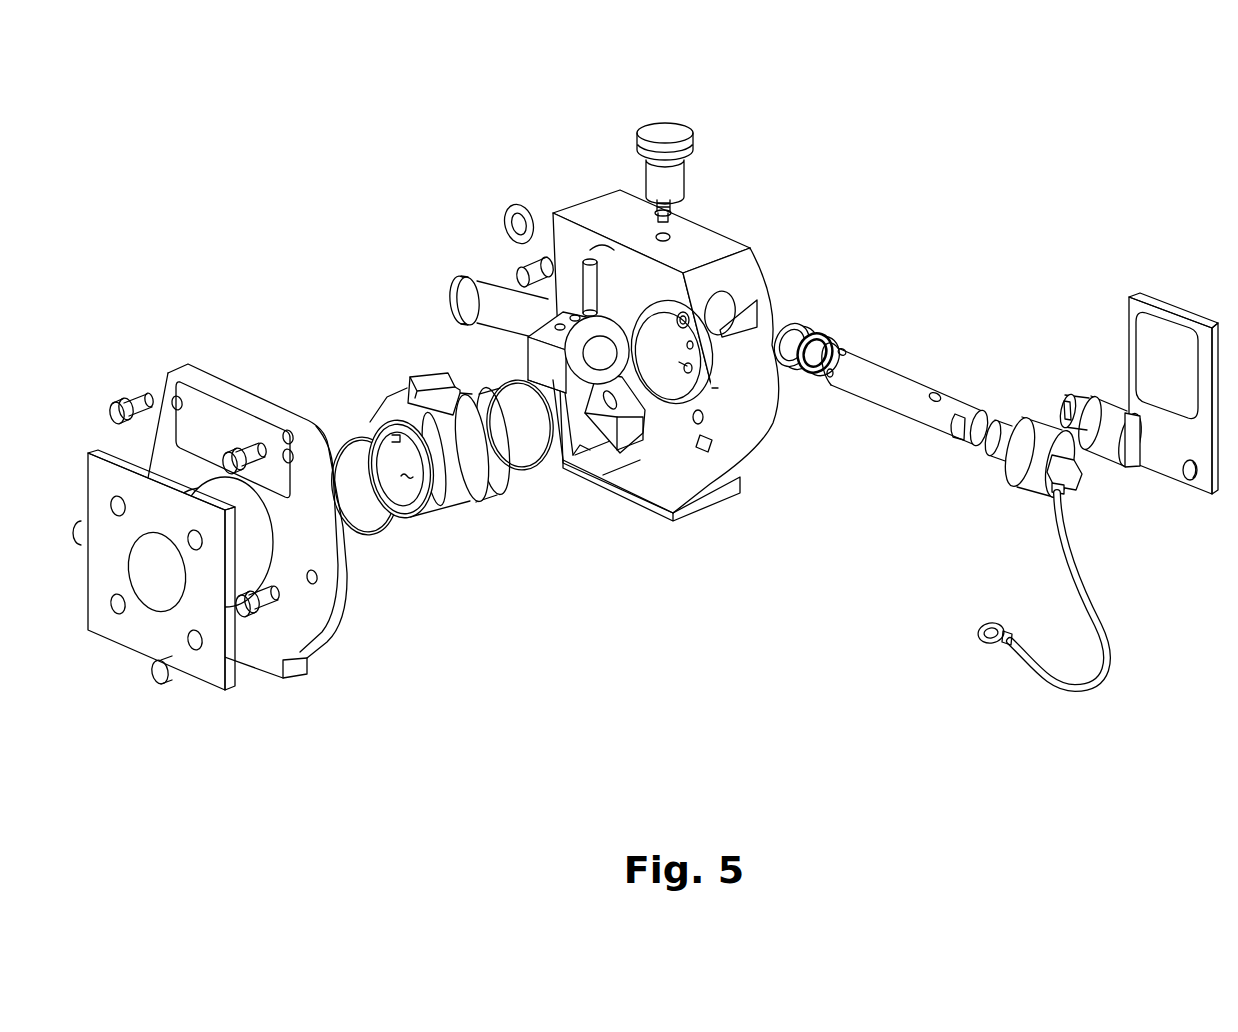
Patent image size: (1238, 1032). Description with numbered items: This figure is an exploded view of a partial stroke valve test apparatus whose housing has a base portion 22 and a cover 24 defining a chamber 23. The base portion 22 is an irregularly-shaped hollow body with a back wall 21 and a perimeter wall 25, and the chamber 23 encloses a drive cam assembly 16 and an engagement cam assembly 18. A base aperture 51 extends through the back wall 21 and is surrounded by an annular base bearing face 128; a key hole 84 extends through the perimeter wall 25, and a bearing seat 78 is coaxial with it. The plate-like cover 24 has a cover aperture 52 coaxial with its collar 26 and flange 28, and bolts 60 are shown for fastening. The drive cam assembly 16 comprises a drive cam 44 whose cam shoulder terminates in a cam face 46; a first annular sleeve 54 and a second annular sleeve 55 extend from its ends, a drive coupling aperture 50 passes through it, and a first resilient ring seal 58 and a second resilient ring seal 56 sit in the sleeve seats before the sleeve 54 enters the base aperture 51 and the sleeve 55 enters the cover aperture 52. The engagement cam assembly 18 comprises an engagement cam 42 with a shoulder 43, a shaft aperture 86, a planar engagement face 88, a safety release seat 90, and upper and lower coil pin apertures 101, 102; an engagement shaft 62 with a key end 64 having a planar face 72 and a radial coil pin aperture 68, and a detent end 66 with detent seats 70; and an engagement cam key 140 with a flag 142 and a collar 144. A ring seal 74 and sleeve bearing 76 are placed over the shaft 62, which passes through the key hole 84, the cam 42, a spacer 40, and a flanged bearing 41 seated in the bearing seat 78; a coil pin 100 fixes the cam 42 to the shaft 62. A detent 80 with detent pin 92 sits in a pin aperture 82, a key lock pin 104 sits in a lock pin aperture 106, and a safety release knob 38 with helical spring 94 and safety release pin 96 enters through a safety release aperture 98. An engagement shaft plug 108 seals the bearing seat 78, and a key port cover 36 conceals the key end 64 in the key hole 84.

The drive cam assembly 16 is at (411, 426).
The engagement cam assembly 18 is at (600, 339).
The back wall 21 is at (695, 455).
The base portion 22 is at (626, 203).
The chamber 23 is at (613, 295).
The cover 24 is at (200, 366).
The perimeter wall 25 is at (605, 482).
The collar 26 is at (250, 563).
The flange 28 is at (128, 628).
The key port cover 36 is at (1020, 467).
The safety release knob 38 is at (672, 137).
The spacer 40 is at (493, 322).
The flanged bearing 41 is at (457, 308).
The engagement cam 42 is at (540, 352).
The shoulder 43 is at (556, 360).
The drive cam 44 is at (380, 412).
The cam face 46 is at (422, 395).
The drive coupling aperture 50 is at (405, 482).
The base aperture 51 is at (692, 348).
The cover aperture 52 is at (148, 586).
The first annular sleeve 54 is at (502, 458).
The second annular sleeve 55 is at (423, 497).
The second resilient ring seal 56 is at (343, 440).
The first resilient ring seal 58 is at (522, 468).
The bolts 60 is at (113, 410).
The engagement shaft 62 is at (917, 394).
The key end 64 is at (965, 410).
The detent end 66 is at (847, 378).
The radial coil pin aperture 68 is at (938, 395).
The detent seats 70 is at (843, 350).
The planar face 72 is at (959, 434).
The ring seal 74 is at (820, 334).
The sleeve bearing 76 is at (795, 323).
The bearing seat 78 is at (600, 250).
The detent 80 is at (520, 272).
The pin aperture 82 is at (567, 362).
The key hole 84 is at (724, 303).
The shaft aperture 86 is at (603, 360).
The engagement face 88 is at (530, 366).
The safety release seat 90 is at (576, 315).
The detent pin 92 is at (560, 323).
The helical spring 94 is at (676, 200).
The safety release pin 96 is at (670, 212).
The safety release aperture 98 is at (672, 237).
The coil pin 100 is at (589, 259).
The upper coil pin aperture 101 is at (686, 316).
The lower coil pin aperture 102 is at (592, 364).
The key lock pin 104 is at (683, 365).
The lock pin aperture 106 is at (690, 370).
The engagement shaft plug 108 is at (504, 232).
The base bearing face 128 is at (704, 443).
The engagement cam key 140 is at (1162, 310).
The flag 142 is at (1170, 445).
The collar 144 is at (1090, 396).